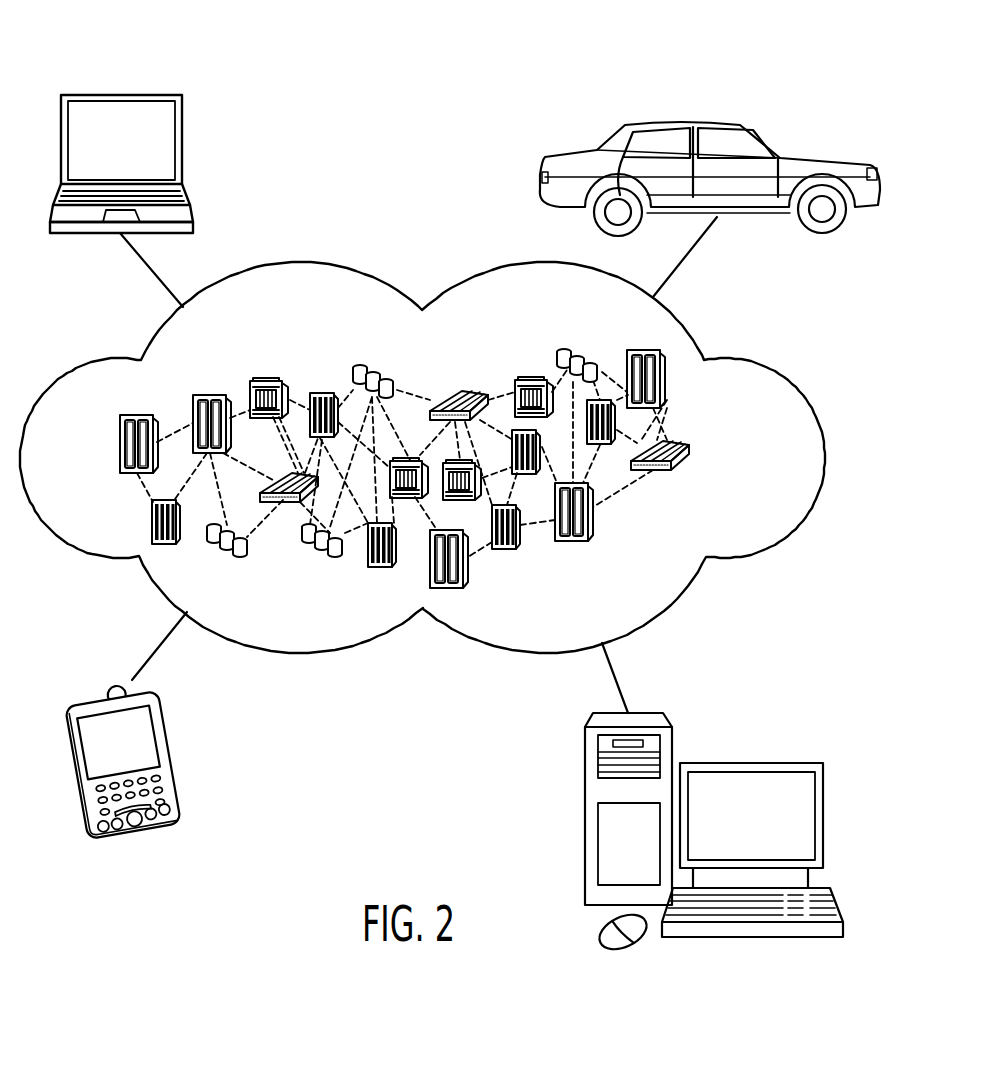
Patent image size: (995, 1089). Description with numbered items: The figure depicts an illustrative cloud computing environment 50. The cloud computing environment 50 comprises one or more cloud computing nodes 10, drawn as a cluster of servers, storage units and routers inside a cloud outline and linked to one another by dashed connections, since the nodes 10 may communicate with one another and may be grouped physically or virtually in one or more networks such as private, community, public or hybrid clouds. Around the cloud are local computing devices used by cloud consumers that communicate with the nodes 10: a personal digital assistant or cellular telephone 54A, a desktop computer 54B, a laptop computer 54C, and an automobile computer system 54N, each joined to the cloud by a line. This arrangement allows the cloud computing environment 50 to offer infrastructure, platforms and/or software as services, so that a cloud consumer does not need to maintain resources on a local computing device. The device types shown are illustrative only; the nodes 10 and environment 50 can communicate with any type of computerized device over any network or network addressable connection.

The cloud computing node 10 is at (701, 456).
The cloud computing environment 50 is at (763, 364).
The personal digital assistant or cellular telephone 54A is at (100, 698).
The desktop computer 54B is at (751, 762).
The laptop computer 54C is at (120, 93).
The automobile computer system 54N is at (687, 120).